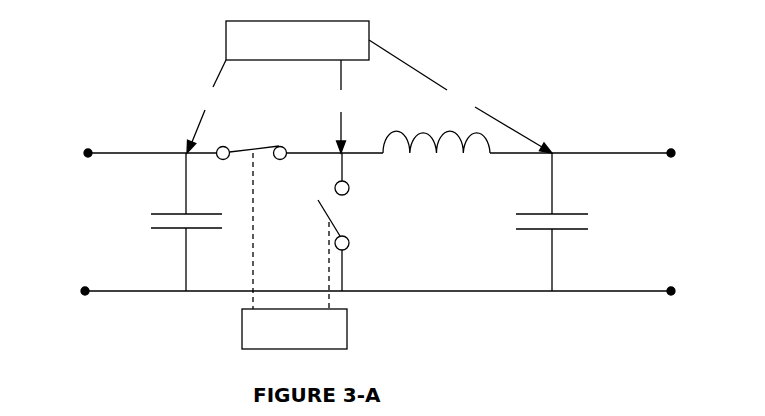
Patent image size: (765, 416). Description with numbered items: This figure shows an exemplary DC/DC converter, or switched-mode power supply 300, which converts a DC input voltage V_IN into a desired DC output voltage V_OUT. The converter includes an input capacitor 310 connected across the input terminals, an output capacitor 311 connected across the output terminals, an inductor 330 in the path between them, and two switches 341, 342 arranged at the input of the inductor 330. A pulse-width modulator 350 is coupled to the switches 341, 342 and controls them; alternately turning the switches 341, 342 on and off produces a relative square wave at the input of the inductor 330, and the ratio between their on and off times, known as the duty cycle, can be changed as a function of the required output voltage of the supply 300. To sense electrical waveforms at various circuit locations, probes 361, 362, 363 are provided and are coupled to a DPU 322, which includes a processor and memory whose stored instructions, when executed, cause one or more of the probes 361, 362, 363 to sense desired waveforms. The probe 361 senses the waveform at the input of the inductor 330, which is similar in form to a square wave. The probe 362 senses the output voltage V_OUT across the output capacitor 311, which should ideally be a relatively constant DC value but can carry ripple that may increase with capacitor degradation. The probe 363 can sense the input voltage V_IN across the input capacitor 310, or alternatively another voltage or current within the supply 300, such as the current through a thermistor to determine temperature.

The switched-mode power supply 300 is at (379, 248).
The input capacitor 310 is at (186, 222).
The output capacitor 311 is at (552, 222).
The DPU 322 is at (297, 40).
The inductor 330 is at (436, 152).
The switch 341 is at (250, 219).
The switch 342 is at (346, 231).
The pulse-width modulator 350 is at (294, 329).
The probe 361 is at (340, 106).
The probe 362 is at (460, 96).
The probe 363 is at (206, 106).